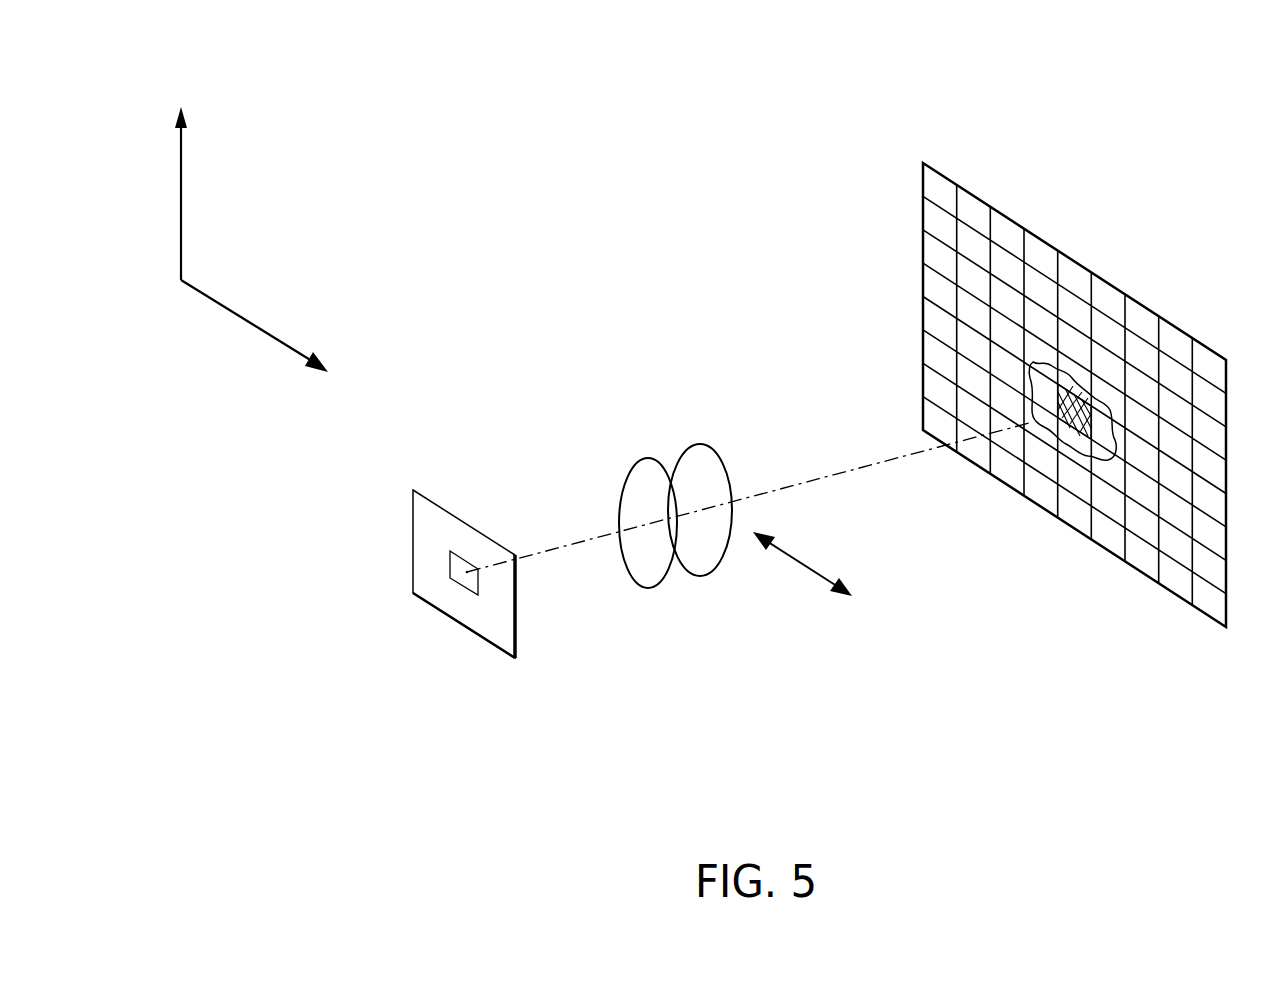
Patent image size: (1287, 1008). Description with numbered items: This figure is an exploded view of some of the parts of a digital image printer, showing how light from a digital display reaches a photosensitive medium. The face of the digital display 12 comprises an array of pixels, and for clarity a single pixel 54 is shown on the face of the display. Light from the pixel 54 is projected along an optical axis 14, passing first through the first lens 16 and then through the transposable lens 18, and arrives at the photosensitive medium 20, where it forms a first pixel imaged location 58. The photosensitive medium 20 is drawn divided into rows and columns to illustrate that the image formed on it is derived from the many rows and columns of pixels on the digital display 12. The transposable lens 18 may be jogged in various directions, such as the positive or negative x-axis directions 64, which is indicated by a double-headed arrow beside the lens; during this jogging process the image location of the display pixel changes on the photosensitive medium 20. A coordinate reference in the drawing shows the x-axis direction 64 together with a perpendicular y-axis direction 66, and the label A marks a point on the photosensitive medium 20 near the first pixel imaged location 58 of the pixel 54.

The digital display 12 is at (438, 497).
The optical axis 14 is at (572, 546).
The first lens 16 is at (648, 588).
The transposable lens 18 is at (700, 576).
The photosensitive medium 20 is at (1003, 219).
The pixel 54 is at (463, 588).
The first pixel imaged location 58 is at (1087, 398).
The x-axis directions 64 is at (226, 311).
The y-axis direction 66 is at (183, 196).
The point A is at (1118, 438).